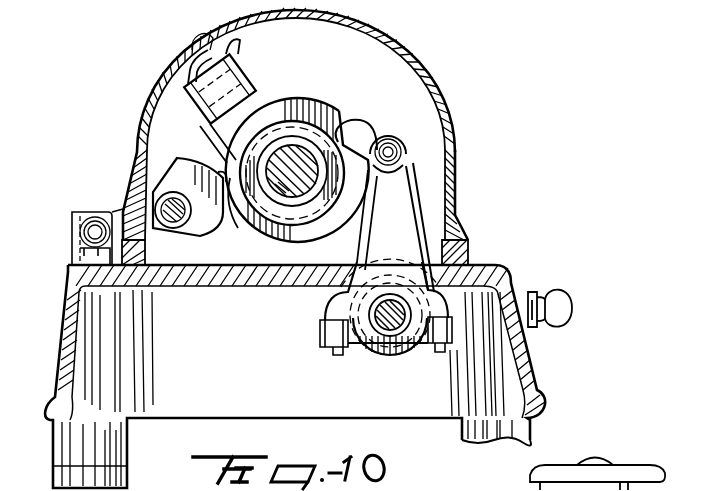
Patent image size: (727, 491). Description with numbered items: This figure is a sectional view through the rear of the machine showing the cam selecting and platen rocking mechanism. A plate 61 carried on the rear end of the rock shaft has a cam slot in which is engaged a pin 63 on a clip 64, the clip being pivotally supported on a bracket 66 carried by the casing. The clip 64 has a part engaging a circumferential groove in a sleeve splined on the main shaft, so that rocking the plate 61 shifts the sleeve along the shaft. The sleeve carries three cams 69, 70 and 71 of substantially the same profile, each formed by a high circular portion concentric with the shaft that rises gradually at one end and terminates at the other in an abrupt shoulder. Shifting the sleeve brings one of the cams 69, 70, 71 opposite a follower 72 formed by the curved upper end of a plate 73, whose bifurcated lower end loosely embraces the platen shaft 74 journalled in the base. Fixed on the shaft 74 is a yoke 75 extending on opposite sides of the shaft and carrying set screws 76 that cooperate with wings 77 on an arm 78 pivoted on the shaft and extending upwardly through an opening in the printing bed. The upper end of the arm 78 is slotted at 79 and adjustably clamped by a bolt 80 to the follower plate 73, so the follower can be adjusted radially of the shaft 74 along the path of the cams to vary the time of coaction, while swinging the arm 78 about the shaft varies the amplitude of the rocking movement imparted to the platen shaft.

The plate 61 is at (158, 166).
The pin 63 is at (217, 173).
The clip 64 is at (185, 92).
The bracket 66 is at (238, 53).
The cam 69 is at (295, 126).
The cam 70 is at (254, 230).
The cam 71 is at (267, 113).
The follower 72 is at (354, 130).
The plate 73 is at (432, 221).
The shaft 74 is at (393, 357).
The yoke 75 is at (358, 353).
The set screws 76 is at (330, 357).
The wings 77 is at (337, 310).
The arm 78 is at (377, 250).
The slot 79 is at (410, 183).
The bolt 80 is at (403, 152).